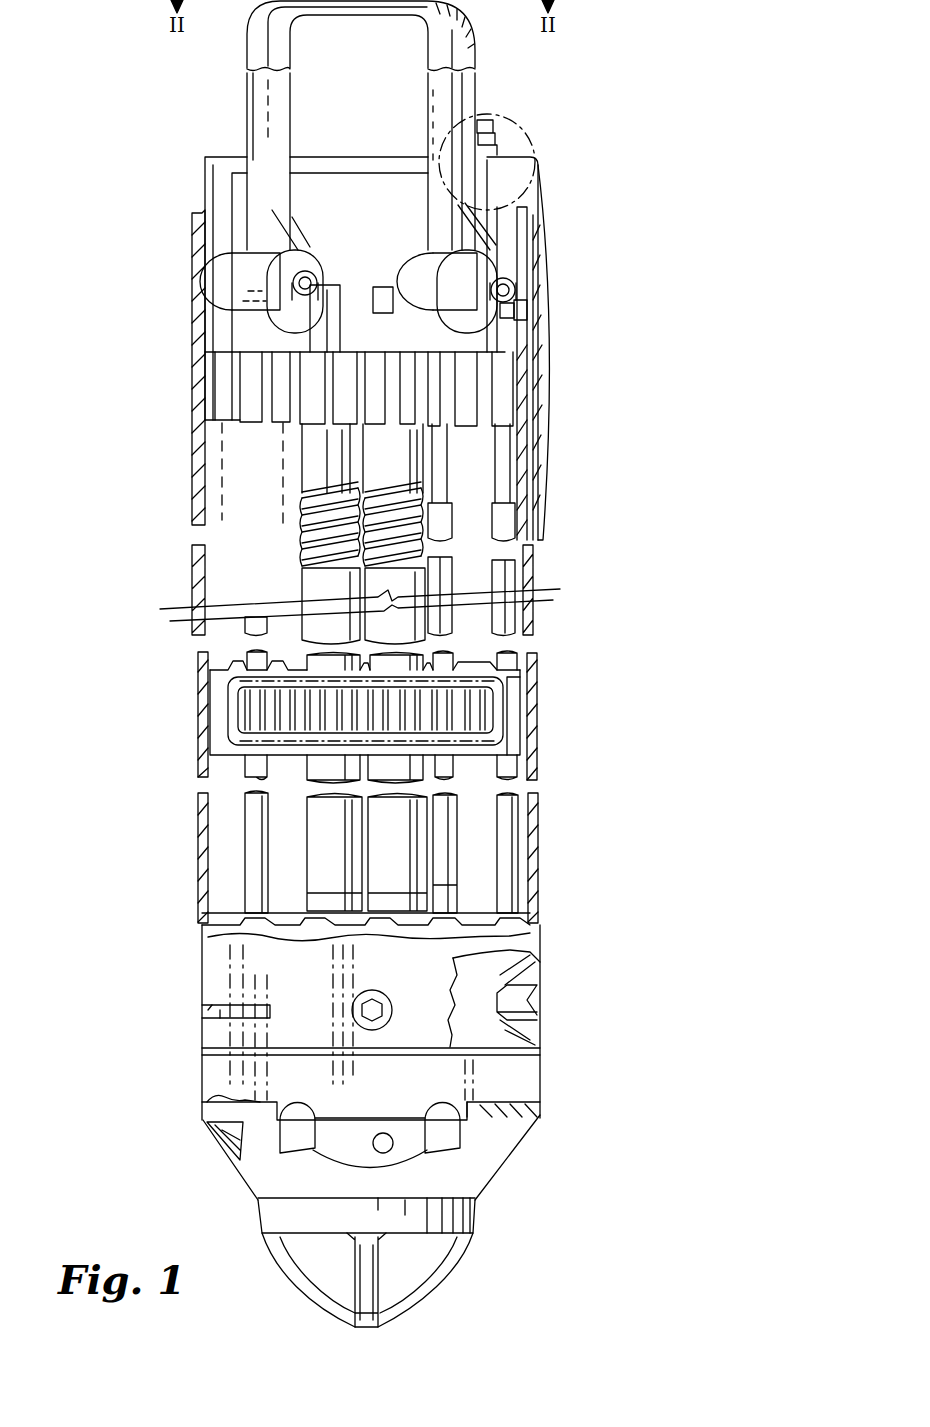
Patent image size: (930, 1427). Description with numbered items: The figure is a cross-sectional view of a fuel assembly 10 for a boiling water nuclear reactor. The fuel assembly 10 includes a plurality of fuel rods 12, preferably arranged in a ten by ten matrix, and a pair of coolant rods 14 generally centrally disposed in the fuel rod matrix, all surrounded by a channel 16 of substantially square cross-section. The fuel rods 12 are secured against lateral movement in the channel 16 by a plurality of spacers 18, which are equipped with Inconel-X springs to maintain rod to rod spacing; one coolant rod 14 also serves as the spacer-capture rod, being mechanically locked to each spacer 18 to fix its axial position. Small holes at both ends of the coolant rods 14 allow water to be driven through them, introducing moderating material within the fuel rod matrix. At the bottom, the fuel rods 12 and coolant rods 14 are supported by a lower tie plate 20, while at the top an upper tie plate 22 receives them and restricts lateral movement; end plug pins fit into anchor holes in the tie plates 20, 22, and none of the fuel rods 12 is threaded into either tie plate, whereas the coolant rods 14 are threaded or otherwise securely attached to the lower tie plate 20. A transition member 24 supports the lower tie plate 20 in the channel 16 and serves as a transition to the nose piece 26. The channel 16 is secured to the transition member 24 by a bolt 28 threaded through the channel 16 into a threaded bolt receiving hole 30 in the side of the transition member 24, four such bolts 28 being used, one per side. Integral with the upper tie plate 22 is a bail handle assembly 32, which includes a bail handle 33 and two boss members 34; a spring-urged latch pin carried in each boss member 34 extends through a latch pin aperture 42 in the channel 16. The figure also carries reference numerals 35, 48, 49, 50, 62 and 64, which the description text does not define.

The fuel assembly 10 is at (684, 480).
The fuel rods 12 is at (492, 572).
The coolant rods 14 is at (372, 470).
The channel 16 is at (205, 683).
The spacers 18 is at (220, 738).
The lower tie plate 20 is at (487, 933).
The upper tie plate 22 is at (505, 384).
The transition member 24 is at (528, 1078).
The nose piece 26 is at (508, 1150).
The bolt 28 is at (352, 1010).
The threaded bolt receiving holes 30 is at (528, 985).
The bail handle assembly 32 is at (178, 114).
The bail handle 33 is at (474, 95).
The boss members 34 is at (216, 276).
The detail region 35 is at (498, 146).
The latch pin aperture 42 is at (520, 258).
The slot 48 is at (204, 1012).
The slot edge 49 is at (220, 1015).
The side plate 50 is at (546, 276).
The nut 62 is at (528, 318).
The washer 64 is at (540, 326).